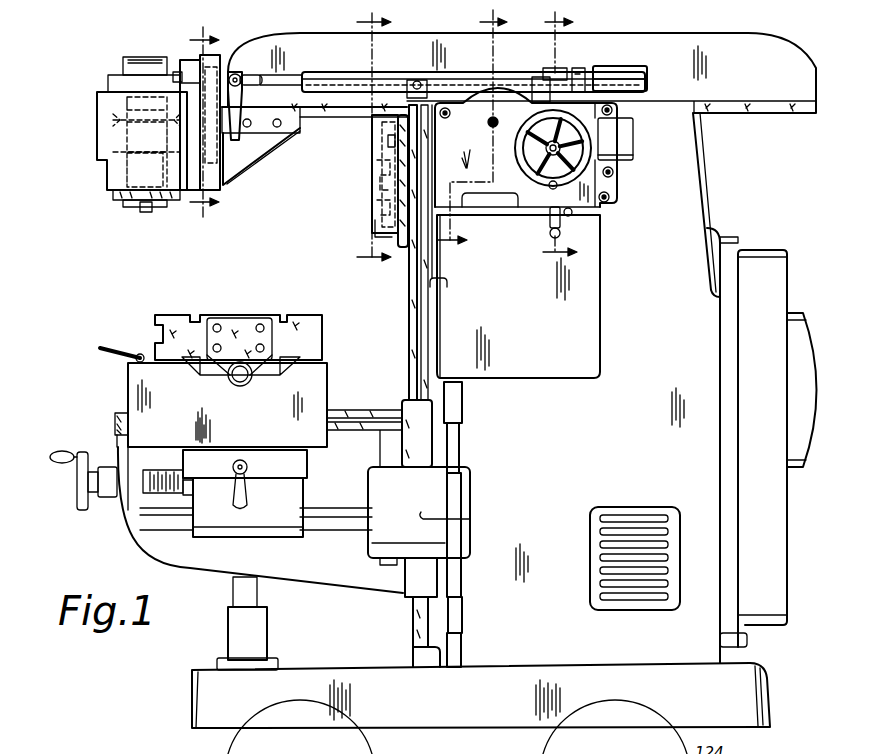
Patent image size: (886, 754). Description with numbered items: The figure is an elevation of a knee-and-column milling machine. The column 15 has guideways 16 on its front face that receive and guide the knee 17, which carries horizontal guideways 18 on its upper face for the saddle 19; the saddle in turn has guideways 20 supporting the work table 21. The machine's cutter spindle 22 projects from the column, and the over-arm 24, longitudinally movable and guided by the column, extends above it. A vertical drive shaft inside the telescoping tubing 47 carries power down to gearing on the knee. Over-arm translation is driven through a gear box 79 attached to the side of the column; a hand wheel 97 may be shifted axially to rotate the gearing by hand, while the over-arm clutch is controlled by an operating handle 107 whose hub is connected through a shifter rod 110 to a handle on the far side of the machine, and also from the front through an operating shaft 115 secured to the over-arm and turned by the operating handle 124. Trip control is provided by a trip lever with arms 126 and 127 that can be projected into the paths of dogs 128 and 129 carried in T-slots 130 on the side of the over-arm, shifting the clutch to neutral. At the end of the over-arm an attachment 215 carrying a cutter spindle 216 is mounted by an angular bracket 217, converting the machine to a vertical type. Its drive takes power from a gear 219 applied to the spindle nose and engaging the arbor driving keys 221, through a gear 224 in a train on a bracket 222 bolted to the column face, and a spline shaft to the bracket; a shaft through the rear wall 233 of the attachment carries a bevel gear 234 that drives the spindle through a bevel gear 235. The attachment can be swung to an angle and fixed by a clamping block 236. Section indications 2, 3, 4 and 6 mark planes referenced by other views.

The section line 2- 2 is at (212, 123).
The section line 3- 3 is at (382, 141).
The section line 4- 4 is at (479, 131).
The section line 6- 6 is at (566, 138).
The column 15 is at (680, 218).
The guideways 16 is at (410, 283).
The knee 17 is at (162, 546).
The horizontal guideways 18 is at (117, 413).
The saddle 19 is at (318, 376).
The guideways 20 is at (305, 359).
The work table 21 is at (311, 315).
The cutter spindle 22 is at (398, 247).
The over-arm 24 is at (757, 49).
The telescoping tubing 47 is at (459, 463).
The gear box 79 is at (525, 194).
The hand wheel 97 is at (588, 173).
The operating handle 107 is at (562, 228).
The shifter rod 110 is at (580, 211).
The operating shaft 115 is at (330, 79).
The operating handle 124 is at (238, 141).
The arm 126 is at (492, 104).
The arm 127 is at (568, 94).
The dog 128 is at (595, 70).
The dog 129 is at (407, 80).
The T-slots 130 is at (646, 85).
The attachment 215 is at (107, 98).
The cutter spindle 216 is at (127, 205).
The angular bracket 217 is at (283, 150).
The gear 219 is at (377, 206).
The arbor driving keys 221 is at (380, 193).
The bracket 222 is at (380, 237).
The gear 224 is at (380, 152).
The rear wall 233 is at (193, 193).
The bevel gear 234 is at (177, 162).
The bevel gear 235 is at (113, 121).
The clamping block 236 is at (187, 72).